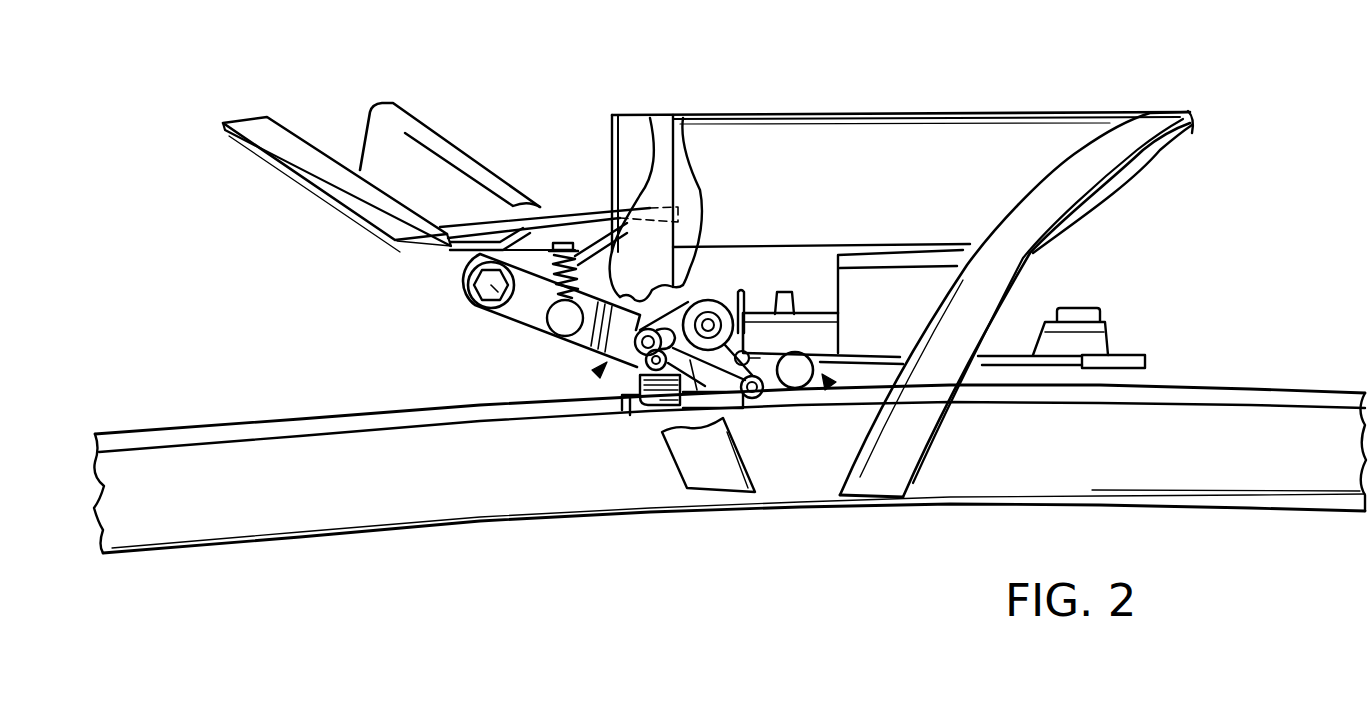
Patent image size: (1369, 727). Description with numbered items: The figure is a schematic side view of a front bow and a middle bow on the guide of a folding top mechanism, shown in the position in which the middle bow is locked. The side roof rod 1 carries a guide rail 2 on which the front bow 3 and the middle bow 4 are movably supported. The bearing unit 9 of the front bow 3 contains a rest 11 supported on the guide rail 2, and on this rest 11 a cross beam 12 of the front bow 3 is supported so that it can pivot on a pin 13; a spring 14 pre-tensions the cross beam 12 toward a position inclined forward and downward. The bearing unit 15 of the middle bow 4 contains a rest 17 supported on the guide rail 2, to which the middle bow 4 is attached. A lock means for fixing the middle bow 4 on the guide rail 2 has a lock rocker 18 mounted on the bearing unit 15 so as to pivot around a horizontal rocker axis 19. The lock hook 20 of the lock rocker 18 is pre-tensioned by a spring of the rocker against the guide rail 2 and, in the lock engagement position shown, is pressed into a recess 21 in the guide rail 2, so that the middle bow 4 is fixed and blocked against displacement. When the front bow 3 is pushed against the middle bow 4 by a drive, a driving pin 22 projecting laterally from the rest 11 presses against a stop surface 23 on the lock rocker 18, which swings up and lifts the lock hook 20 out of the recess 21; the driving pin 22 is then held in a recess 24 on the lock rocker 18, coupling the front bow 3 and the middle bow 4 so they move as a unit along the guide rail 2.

The side roof rod 1 is at (373, 490).
The guide rail 2 is at (251, 432).
The front bow 3 is at (437, 128).
The middle bow 4 is at (857, 158).
The bearing unit 9 is at (600, 372).
The rest 11 is at (527, 318).
The cross beam 12 is at (320, 175).
The pin 13 is at (484, 314).
The spring 14 is at (548, 262).
The bearing unit 15 is at (828, 382).
The rest 17 is at (787, 278).
The lock rocker 18 is at (751, 398).
The rocker axis 19 is at (778, 388).
The lock hook 20 is at (707, 378).
The recess 21 is at (657, 395).
The driving pin 22 is at (650, 118).
The stop surface 23 is at (683, 118).
The recess 24 is at (632, 362).